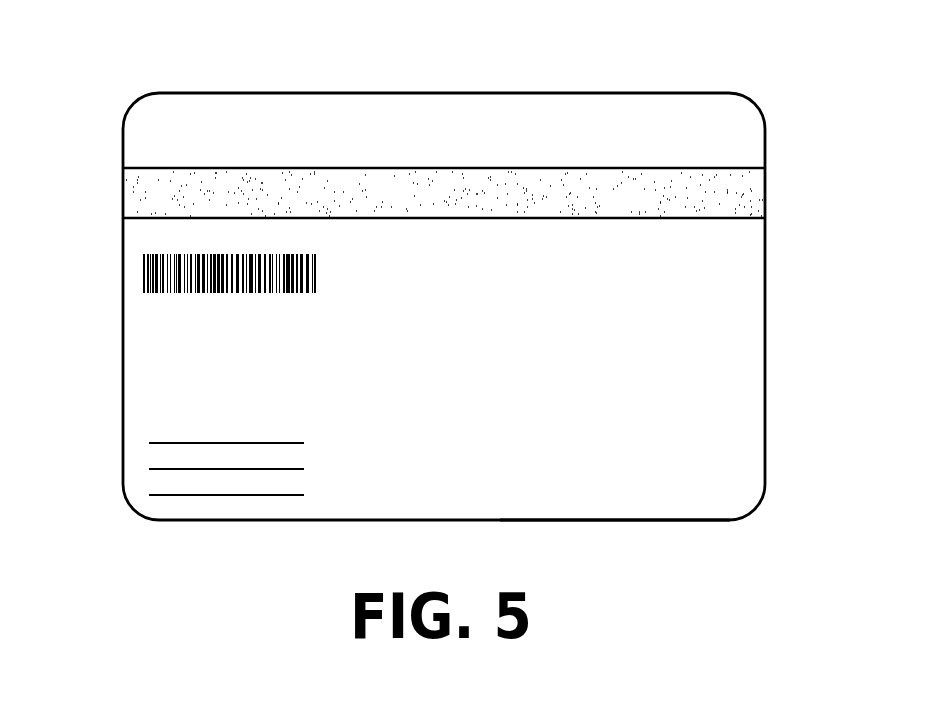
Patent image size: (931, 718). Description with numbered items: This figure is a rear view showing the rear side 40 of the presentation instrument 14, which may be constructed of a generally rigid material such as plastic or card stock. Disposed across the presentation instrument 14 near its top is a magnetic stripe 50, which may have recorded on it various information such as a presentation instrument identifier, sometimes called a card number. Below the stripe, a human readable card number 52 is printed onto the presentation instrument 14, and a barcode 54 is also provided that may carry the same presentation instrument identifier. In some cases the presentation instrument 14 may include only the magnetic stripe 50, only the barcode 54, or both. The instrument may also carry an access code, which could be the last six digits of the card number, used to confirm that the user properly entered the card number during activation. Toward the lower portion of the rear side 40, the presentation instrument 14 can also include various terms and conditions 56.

The presentation instrument 14 is at (303, 93).
The magnetic stripe 50 is at (557, 177).
The barcode 54 is at (137, 280).
The human readable card number 52 is at (672, 287).
The terms and conditions 56 is at (170, 484).
The rear side 40 is at (648, 508).